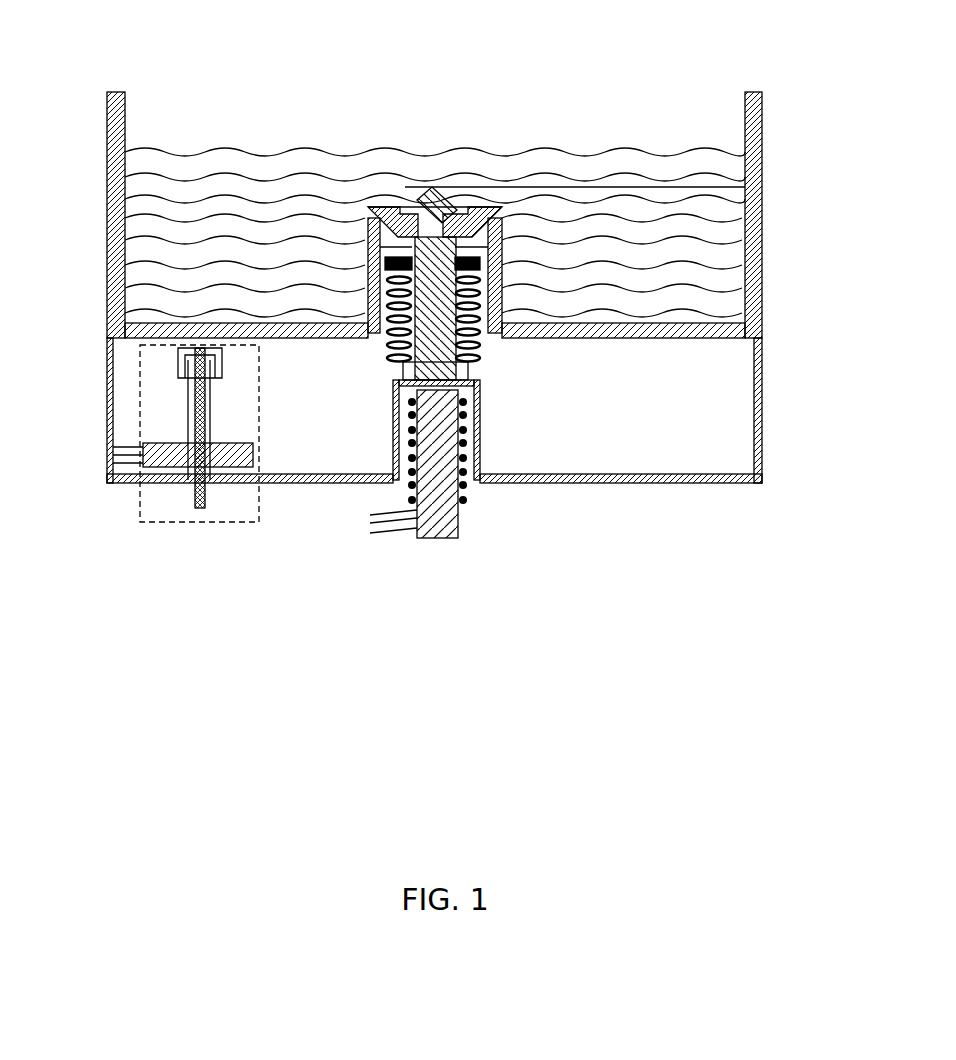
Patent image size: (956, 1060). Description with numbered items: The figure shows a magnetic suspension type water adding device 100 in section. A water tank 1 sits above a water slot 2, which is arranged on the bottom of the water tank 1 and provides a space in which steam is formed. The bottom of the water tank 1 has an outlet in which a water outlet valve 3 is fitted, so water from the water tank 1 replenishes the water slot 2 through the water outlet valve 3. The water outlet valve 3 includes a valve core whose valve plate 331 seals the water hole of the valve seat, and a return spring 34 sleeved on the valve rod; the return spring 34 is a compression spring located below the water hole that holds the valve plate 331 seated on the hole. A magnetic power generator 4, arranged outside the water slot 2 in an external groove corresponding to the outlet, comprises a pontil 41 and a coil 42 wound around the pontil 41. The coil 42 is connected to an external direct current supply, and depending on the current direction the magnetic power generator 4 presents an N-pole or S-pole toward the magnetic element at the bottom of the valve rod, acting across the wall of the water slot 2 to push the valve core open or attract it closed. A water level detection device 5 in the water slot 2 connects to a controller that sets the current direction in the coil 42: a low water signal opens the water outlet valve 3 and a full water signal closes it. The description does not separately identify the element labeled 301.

The magnetic suspension type water adding device 100 is at (312, 642).
The water tank 1 is at (127, 230).
The water slot 2 is at (747, 430).
The water outlet valve 3 is at (357, 70).
The valve plunger 301 is at (407, 210).
The valve plate 331 is at (373, 212).
The return spring 34 is at (497, 210).
The magnetic power generator 4 is at (498, 633).
The pontil 41 is at (465, 495).
The coil 42 is at (455, 538).
The water level detection device 5 is at (147, 432).